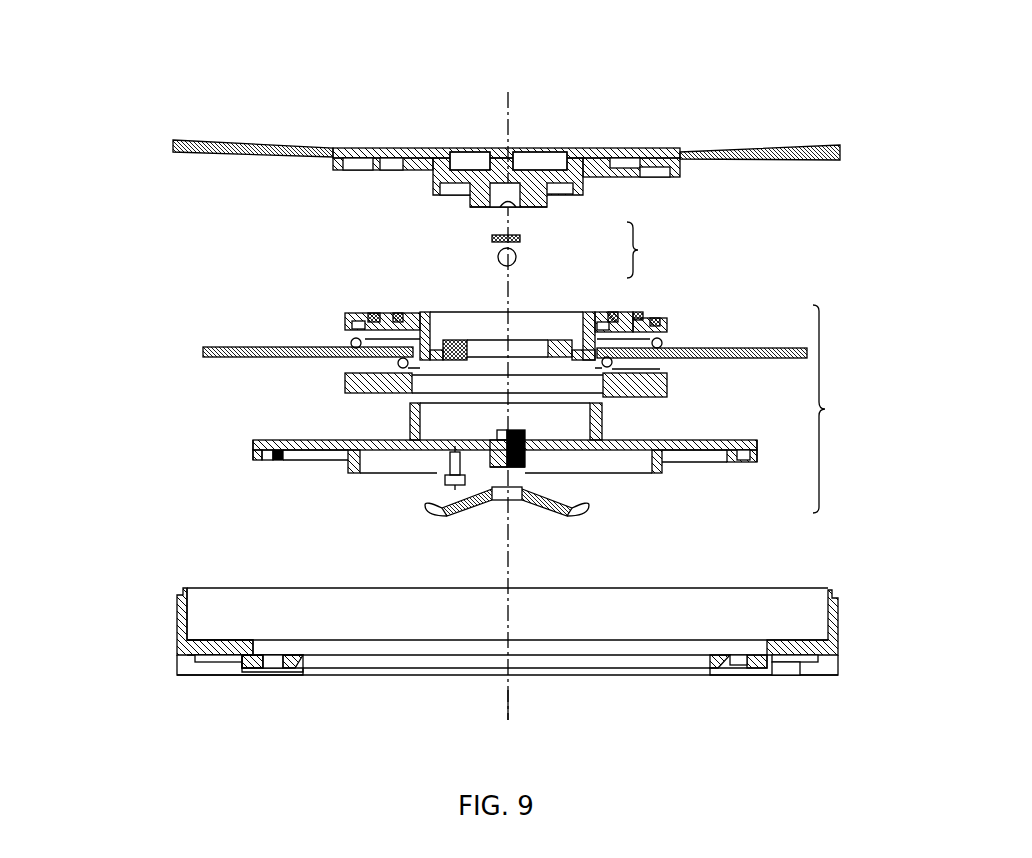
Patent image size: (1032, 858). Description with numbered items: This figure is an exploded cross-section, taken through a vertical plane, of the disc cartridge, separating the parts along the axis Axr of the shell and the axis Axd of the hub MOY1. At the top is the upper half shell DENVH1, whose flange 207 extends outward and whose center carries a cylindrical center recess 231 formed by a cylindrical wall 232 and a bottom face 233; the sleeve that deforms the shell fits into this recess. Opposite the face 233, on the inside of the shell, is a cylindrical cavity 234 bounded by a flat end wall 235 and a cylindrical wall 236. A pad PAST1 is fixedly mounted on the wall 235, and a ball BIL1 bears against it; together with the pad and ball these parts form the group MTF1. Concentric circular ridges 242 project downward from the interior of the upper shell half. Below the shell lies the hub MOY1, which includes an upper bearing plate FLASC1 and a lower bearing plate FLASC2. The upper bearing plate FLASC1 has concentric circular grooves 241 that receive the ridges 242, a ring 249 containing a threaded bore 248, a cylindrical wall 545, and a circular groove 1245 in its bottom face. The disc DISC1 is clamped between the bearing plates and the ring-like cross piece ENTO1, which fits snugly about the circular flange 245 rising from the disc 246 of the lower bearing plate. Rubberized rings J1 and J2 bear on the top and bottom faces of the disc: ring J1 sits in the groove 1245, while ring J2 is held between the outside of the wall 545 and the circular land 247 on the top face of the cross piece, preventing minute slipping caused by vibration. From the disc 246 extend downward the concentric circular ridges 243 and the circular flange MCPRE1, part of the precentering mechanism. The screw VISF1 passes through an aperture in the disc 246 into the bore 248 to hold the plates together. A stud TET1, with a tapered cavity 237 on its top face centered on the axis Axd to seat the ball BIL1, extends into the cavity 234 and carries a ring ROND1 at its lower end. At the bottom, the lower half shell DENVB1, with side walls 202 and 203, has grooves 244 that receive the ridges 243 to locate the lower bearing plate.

The upper cover flange 207 is at (208, 140).
The upper half shell DENVH1 is at (760, 148).
The cylindrical center recess 231 is at (460, 158).
The cylindrical wall 232 is at (567, 158).
The bottom face 233 is at (490, 167).
The cylindrical cavity 234 is at (520, 200).
The flat end wall 235 is at (500, 220).
The cylindrical wall 236 is at (497, 207).
The concentric circular ridges 242 is at (398, 168).
The pad PAST1 is at (520, 238).
The ball BIL1 is at (516, 257).
The fixing means MTF1 is at (661, 250).
The upper bearing plate FLASC1 is at (345, 322).
The concentric circular grooves 241 is at (397, 317).
The threaded bore 248 is at (457, 340).
The ring 249 is at (560, 340).
The cylindrical wall 545 is at (590, 320).
The circular groove 1245 is at (667, 335).
The disc DISC1 is at (778, 348).
The rubberized ring J1 is at (350, 342).
The rubberized ring J2 is at (398, 363).
The circular land 247 is at (612, 362).
The ring-like cross piece ENTO1 is at (345, 380).
The lower bearing plate FLASC2 is at (410, 418).
The circular flange 245 is at (602, 423).
The disc 246 is at (710, 440).
The concentric circular ridges 243 is at (257, 457).
The circular flange MCPRE1 is at (323, 491).
The tapered cavity 237 is at (513, 433).
The stud TET1 is at (523, 460).
The screw VISF1 is at (445, 481).
The ring ROND1 is at (447, 513).
The hub MOY1 is at (850, 409).
The lower half shell DENVB1 is at (837, 617).
The side wall 202 is at (177, 619).
The side wall 203 is at (838, 637).
The grooves 244 is at (287, 672).
The rotation axis Axr is at (508, 92).
The axis of hub Axd is at (508, 700).